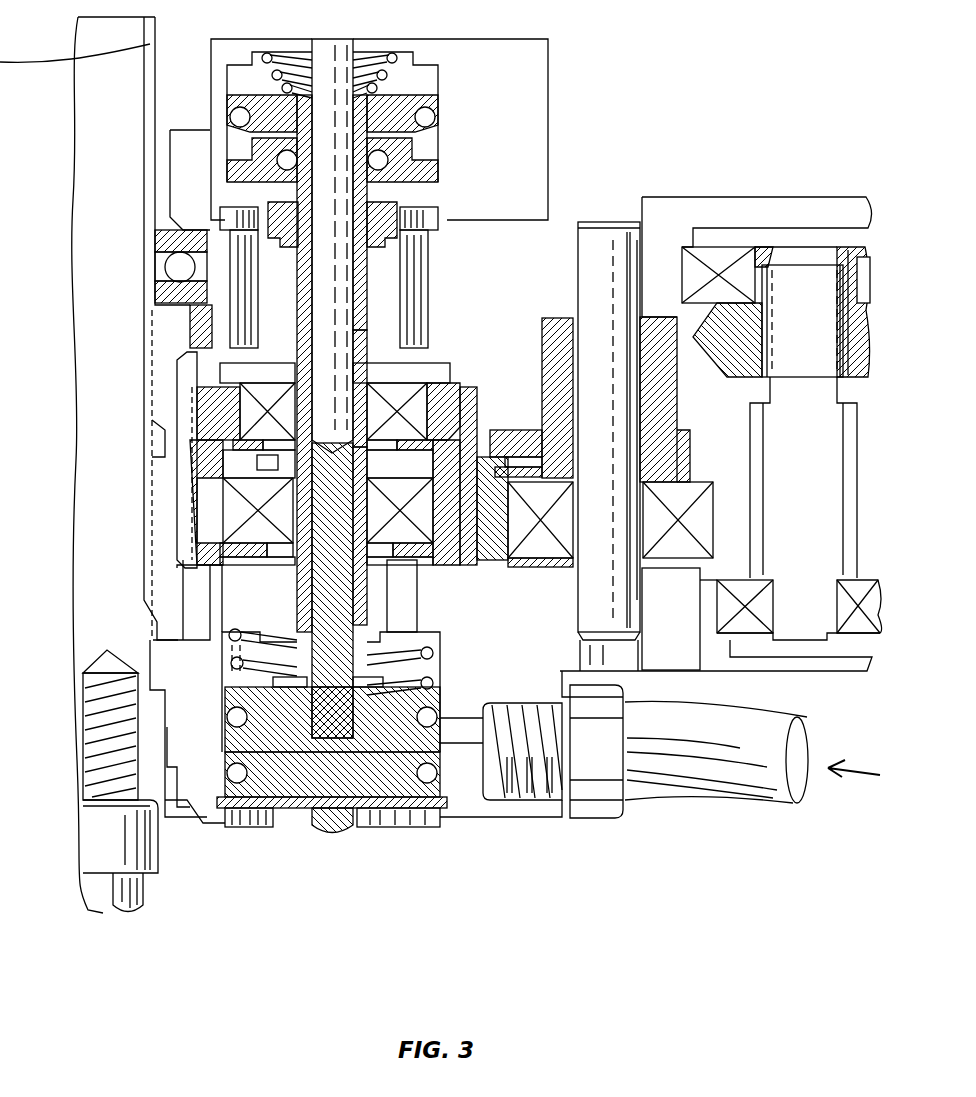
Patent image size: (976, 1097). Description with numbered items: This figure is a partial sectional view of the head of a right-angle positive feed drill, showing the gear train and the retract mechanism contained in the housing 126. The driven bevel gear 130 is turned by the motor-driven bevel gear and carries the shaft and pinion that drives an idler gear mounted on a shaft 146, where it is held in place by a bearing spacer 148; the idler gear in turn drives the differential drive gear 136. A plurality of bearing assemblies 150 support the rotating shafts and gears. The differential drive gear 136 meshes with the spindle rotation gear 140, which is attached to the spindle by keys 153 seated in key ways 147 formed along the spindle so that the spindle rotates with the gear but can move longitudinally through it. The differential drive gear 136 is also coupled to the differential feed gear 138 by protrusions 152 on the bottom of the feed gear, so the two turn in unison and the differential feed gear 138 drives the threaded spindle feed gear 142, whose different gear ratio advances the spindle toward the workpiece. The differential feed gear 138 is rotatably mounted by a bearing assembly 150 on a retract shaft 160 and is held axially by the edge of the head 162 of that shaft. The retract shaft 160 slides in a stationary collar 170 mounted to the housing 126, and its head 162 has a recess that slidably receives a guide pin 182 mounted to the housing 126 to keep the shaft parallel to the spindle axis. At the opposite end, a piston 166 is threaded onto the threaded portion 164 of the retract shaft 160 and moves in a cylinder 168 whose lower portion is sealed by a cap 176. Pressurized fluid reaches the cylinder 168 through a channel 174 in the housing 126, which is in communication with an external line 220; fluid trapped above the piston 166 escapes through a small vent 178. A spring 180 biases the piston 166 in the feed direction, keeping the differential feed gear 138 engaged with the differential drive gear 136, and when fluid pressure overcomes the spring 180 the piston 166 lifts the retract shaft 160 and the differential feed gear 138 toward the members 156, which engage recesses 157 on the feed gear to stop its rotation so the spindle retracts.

The housing 126 is at (495, 45).
The driven bevel gear 130 is at (738, 337).
The differential drive gear 136 is at (210, 530).
The differential feed gear 138 is at (230, 422).
The spindle rotation gear 140 is at (162, 587).
The spindle feed gear 142 is at (163, 387).
The shaft 146 is at (603, 237).
The key ways 147 is at (125, 48).
The bearing spacer 148 is at (553, 337).
The bearing assemblies 150 is at (255, 400).
The protrusions 152 is at (475, 453).
The keys 153 is at (148, 487).
The members 156 is at (447, 240).
The recesses 157 is at (248, 372).
The retract shaft 160 is at (333, 610).
The head 162 is at (360, 353).
The threaded portion 164 is at (337, 715).
The piston 166 is at (265, 728).
The cylinder 168 is at (233, 682).
The collar 170 is at (297, 597).
The channel 174 is at (453, 730).
The cap 176 is at (340, 820).
The vent 178 is at (413, 595).
The spring 180 is at (407, 655).
The guide pin 182 is at (327, 50).
The external line 220 is at (683, 787).